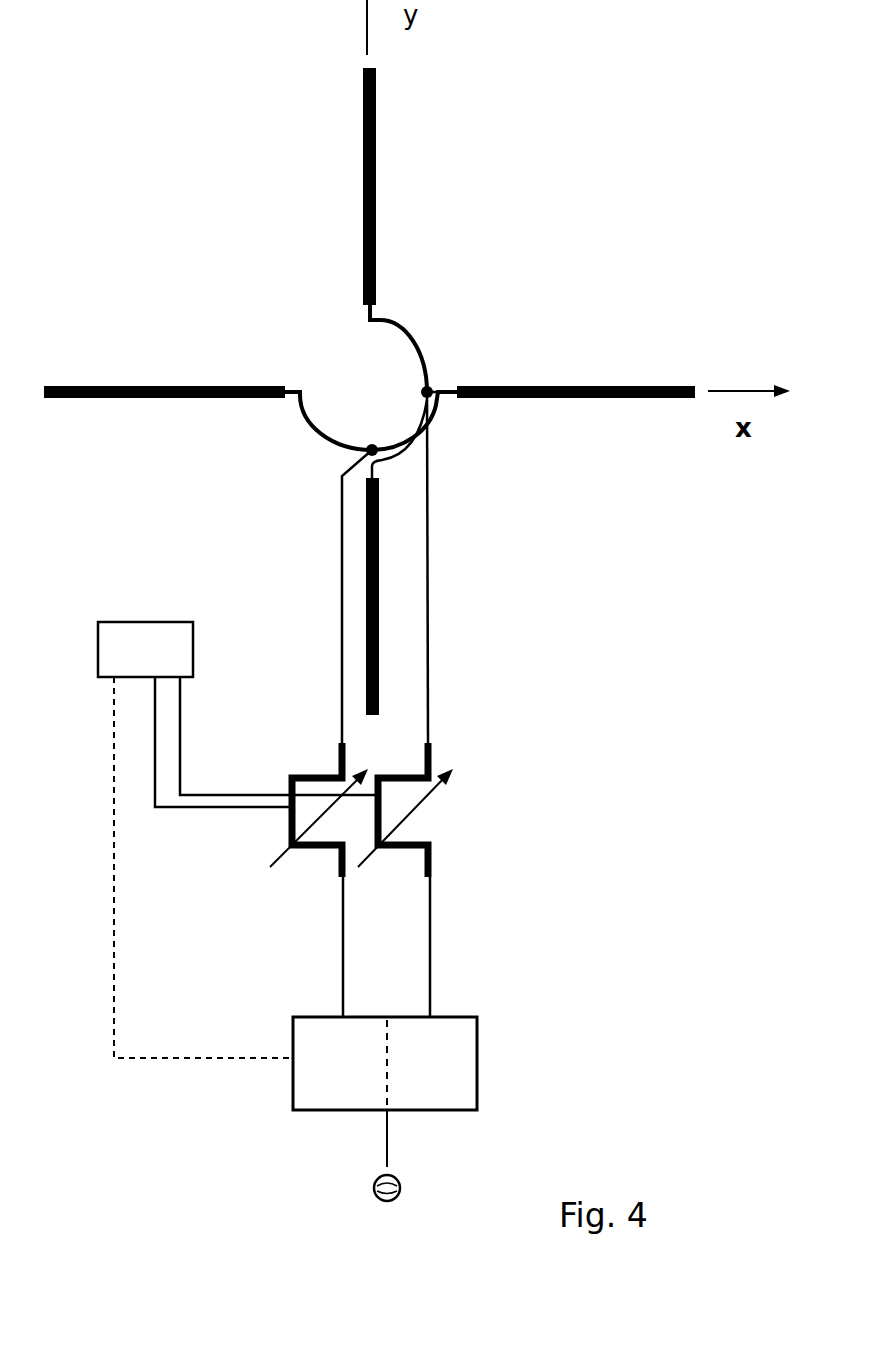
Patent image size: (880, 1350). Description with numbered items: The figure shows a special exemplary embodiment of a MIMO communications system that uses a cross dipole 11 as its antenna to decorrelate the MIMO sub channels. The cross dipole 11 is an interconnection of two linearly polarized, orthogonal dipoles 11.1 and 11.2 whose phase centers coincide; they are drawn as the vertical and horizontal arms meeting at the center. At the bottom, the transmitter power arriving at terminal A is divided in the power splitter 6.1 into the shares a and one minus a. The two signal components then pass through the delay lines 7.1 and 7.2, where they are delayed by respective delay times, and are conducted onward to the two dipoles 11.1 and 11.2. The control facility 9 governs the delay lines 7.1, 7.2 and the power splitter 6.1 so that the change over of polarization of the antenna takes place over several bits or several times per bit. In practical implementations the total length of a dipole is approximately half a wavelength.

The cross dipole 11 is at (369, 391).
The first dipole 11.1 is at (384, 227).
The second dipole 11.2 is at (560, 374).
The first delay line 7.1 is at (278, 821).
The second delay line 7.2 is at (422, 807).
The control facility 9 is at (238, 840).
The power splitter 6.1 is at (490, 1057).
The output signal A is at (400, 1203).